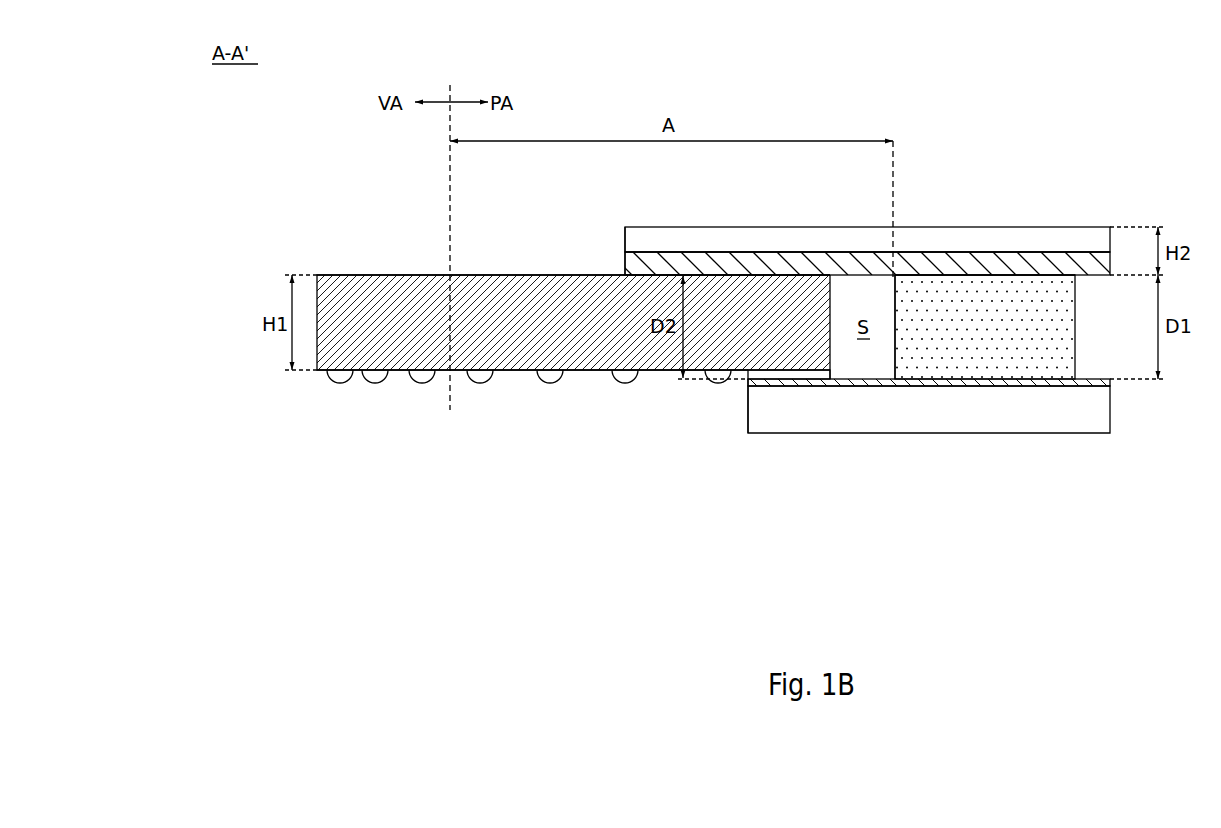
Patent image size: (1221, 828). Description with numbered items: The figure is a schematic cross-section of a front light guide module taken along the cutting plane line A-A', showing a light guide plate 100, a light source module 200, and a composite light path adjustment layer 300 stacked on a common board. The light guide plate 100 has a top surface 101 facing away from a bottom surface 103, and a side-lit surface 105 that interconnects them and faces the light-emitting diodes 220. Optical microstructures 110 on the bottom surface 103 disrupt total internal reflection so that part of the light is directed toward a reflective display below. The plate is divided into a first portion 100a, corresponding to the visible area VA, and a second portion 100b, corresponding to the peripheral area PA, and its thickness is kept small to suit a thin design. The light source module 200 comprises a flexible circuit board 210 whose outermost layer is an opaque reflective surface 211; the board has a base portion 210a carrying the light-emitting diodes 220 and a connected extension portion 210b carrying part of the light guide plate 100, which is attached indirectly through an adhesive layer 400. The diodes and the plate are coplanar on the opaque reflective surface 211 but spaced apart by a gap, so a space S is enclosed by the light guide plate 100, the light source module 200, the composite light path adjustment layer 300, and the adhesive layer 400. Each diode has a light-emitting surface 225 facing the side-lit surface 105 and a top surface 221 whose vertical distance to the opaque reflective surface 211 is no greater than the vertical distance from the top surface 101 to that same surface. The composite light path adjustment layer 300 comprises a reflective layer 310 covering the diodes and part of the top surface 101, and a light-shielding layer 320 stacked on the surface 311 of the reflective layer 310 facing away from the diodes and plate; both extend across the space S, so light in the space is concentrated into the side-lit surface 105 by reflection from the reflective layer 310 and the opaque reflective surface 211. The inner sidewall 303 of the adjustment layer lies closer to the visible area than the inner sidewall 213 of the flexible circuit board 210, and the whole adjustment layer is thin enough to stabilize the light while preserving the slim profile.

The light guide plate 100 is at (584, 352).
The first portion 100a is at (398, 365).
The second portion 100b is at (500, 368).
The top surface 101 is at (537, 266).
The bottom surface 103 is at (522, 380).
The side-lit surface 105 is at (834, 290).
The optical microstructures 110 is at (383, 488).
The light source module 200 is at (895, 371).
The flexible circuit board 210 is at (895, 416).
The base portion 210a is at (968, 412).
The extension portion 210b is at (862, 415).
The opaque reflective surface 211 is at (1098, 368).
The inner sidewall 213 is at (740, 409).
The light-emitting diodes 220 is at (985, 350).
The top surface 221 is at (988, 266).
The light-emitting surface 225 is at (902, 290).
The composite light path adjustment layer 300 is at (862, 206).
The inner sidewall 303 is at (618, 245).
The reflective layer 310 is at (1070, 262).
The surface 311 is at (722, 244).
The light-shielding layer 320 is at (1023, 240).
The adhesive layer 400 is at (800, 385).